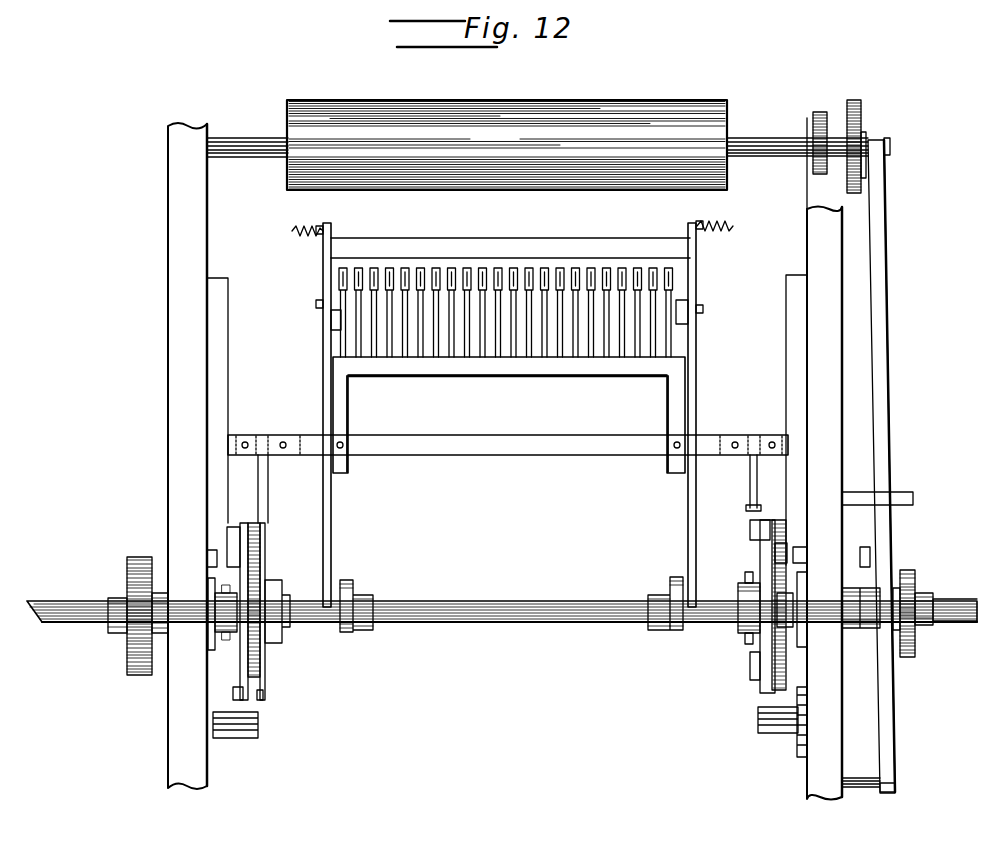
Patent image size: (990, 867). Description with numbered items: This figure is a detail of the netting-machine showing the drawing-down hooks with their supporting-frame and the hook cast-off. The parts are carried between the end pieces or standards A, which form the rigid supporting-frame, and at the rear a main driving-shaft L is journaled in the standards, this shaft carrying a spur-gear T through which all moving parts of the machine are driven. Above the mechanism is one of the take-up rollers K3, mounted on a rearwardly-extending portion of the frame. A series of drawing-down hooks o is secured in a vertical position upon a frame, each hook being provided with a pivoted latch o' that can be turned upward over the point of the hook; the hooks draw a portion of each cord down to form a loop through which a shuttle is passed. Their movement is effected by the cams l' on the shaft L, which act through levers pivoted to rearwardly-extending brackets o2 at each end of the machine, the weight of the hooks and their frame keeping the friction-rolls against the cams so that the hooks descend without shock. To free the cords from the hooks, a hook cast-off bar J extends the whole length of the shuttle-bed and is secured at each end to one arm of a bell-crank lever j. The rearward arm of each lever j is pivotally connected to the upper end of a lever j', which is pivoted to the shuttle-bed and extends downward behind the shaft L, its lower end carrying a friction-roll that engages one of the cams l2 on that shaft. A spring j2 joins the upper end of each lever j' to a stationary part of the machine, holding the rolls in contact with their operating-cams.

The end pieces or standards A is at (192, 748).
The take-up roller K3 is at (548, 128).
The hook cast-off bar J is at (458, 250).
The drawing-down hooks o is at (506, 296).
The bell-crank lever j is at (507, 414).
The lever j' is at (509, 336).
The spring j2 is at (522, 226).
The pivoted latch o' is at (509, 422).
The rearwardly-extending brackets o2 is at (797, 390).
The main driving-shaft L is at (497, 623).
The spur-gear T is at (127, 672).
The cams l2 is at (353, 592).
The cams l' is at (570, 629).